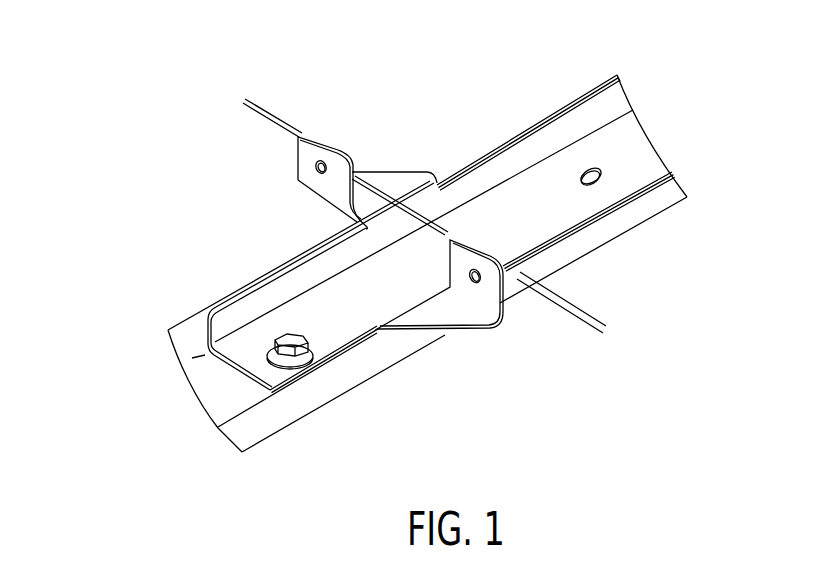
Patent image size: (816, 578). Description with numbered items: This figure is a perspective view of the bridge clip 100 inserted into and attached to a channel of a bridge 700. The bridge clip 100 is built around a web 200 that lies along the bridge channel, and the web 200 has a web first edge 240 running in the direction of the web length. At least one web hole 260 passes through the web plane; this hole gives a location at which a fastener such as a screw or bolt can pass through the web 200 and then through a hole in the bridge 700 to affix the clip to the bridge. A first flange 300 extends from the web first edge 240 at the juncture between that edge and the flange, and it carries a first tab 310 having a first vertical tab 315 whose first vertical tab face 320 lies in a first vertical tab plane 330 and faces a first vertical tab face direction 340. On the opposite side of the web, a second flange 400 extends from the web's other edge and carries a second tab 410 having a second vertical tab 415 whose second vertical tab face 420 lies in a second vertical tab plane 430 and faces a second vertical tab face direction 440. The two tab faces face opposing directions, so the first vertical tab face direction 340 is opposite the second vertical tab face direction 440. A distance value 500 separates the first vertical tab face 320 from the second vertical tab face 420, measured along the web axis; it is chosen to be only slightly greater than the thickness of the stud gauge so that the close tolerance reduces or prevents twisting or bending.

The bridge clip 100 is at (117, 169).
The web 200 is at (627, 142).
The web first edge 240 is at (272, 302).
The web hole 260 is at (601, 181).
The first flange 300 is at (622, 89).
The first tab 310 is at (358, 145).
The first vertical tab 315 is at (314, 136).
The first vertical tab face 320 is at (322, 187).
The first vertical tab plane 330 is at (608, 322).
The first vertical tab face direction 340 is at (283, 187).
The second flange 400 is at (655, 161).
The second tab 410 is at (442, 350).
The second vertical tab 415 is at (488, 300).
The second vertical tab face 420 is at (516, 267).
The second vertical tab plane 430 is at (588, 332).
The second vertical tab face direction 440 is at (533, 218).
The distance value 500 is at (292, 83).
The bridge 700 is at (252, 421).